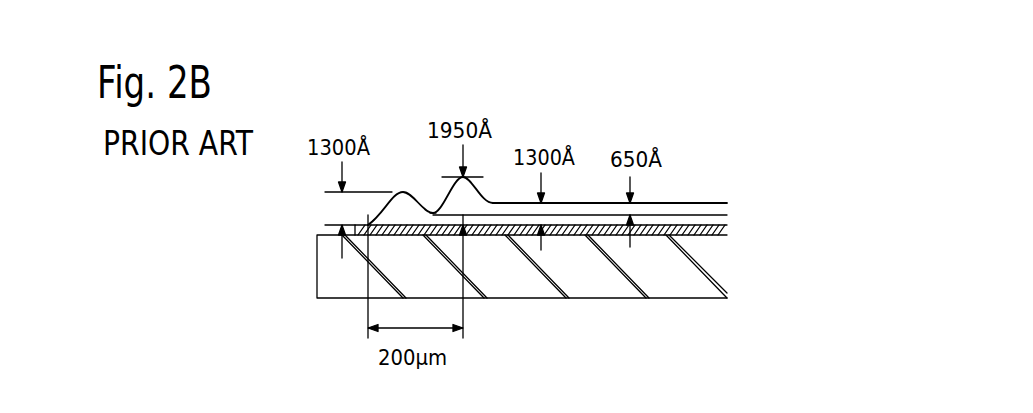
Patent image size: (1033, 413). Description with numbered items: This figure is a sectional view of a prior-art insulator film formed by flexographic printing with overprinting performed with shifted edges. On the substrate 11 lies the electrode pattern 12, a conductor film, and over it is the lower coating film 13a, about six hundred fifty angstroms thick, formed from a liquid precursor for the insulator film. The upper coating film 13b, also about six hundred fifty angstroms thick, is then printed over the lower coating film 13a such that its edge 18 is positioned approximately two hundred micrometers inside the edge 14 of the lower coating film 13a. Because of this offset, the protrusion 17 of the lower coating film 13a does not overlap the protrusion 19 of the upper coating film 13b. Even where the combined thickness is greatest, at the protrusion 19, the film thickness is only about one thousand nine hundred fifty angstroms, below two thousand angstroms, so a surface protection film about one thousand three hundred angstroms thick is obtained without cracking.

The substrate 11 is at (607, 290).
The electrode pattern 12 is at (717, 227).
The lower coating film 13a is at (672, 220).
The upper coating film 13b is at (700, 212).
The edge of the lower coating film 14 is at (366, 224).
The protrusion of the lower coating film 17 is at (407, 202).
The edge of the upper coating film 18 is at (432, 214).
The protrusion of the upper coating film 19 is at (465, 195).